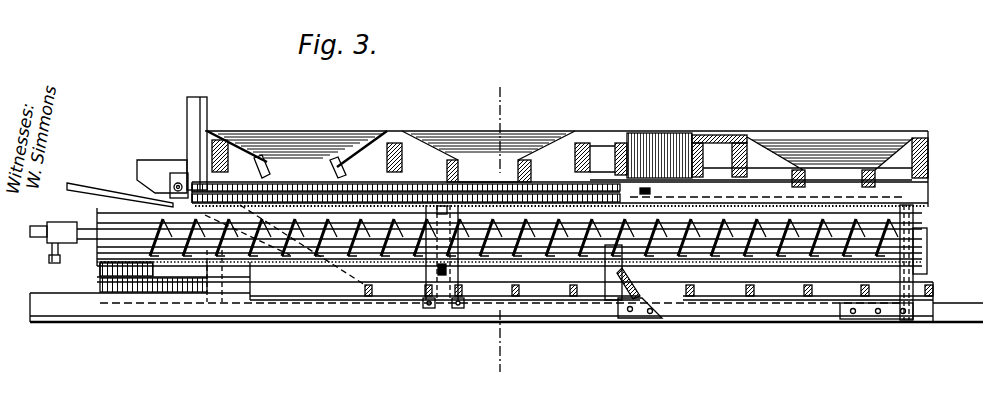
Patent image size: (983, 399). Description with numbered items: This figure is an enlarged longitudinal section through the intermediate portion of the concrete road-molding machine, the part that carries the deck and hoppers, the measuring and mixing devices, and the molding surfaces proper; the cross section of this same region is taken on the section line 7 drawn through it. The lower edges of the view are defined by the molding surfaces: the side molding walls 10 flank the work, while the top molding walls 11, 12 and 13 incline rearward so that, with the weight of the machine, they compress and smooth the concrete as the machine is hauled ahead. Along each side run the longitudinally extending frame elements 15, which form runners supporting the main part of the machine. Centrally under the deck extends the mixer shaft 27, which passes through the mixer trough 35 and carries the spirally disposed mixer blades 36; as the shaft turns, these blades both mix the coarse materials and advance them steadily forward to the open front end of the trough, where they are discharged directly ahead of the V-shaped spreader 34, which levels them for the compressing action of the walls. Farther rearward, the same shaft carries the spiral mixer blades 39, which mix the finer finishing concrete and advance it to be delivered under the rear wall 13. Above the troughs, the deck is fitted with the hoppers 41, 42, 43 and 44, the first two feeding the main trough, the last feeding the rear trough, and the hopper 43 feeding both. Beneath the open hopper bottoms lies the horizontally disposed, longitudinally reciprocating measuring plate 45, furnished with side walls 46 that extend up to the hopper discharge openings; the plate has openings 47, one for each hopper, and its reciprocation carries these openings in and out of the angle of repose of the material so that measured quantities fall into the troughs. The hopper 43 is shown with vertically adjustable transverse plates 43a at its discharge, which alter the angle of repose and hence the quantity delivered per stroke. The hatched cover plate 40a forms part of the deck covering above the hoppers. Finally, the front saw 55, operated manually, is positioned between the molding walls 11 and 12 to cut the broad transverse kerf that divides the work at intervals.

The section line 7— 7 is at (508, 229).
The side molding walls 10 is at (587, 314).
The front top molding wall 11 is at (293, 298).
The top molding wall 12 is at (553, 304).
The rear top molding wall 13 is at (787, 302).
The longitudinally extending frame elements 15 is at (446, 270).
The mixer shaft 27 is at (87, 236).
The V-shaped spreader 34 is at (180, 285).
The mixer trough 35 is at (277, 250).
The mixer blades 36 is at (278, 228).
The spiral mixer blades 39 is at (680, 262).
The hatched cover plate 40a is at (752, 90).
The hopper 41 is at (304, 140).
The hopper 42 is at (496, 156).
The hopper 43 is at (640, 150).
The vertically adjustable transverse plates 43a is at (640, 194).
The hopper 44 is at (759, 162).
The measuring plate 45 is at (705, 207).
The side walls 46 is at (650, 187).
The openings 47 is at (413, 203).
The front saw 55 is at (436, 268).